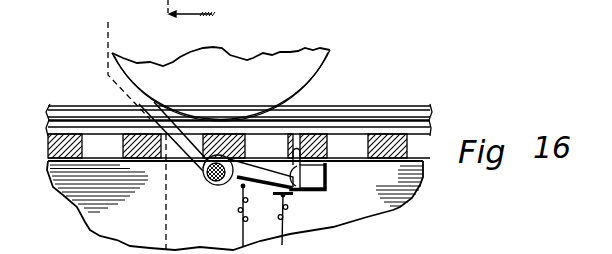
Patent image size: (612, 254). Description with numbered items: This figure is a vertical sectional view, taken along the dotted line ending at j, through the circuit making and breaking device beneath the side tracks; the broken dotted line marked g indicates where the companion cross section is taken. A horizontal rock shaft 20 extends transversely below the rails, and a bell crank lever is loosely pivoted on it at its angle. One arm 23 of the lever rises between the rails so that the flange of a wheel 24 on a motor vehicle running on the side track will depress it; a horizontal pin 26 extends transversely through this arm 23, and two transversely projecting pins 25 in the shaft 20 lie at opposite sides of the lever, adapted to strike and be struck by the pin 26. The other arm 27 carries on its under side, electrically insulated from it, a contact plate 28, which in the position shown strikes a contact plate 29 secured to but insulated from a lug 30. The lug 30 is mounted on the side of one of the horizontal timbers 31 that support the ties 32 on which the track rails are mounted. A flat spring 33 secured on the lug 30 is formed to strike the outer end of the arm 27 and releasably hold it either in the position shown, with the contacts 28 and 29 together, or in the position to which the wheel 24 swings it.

The rock shaft 20 is at (220, 185).
The arm of bell crank lever 23 is at (173, 135).
The disc 24 is at (221, 84).
The transversely projecting pins 25 is at (212, 180).
The horizontal pin 26 is at (205, 173).
The arm of bell crank lever 27 is at (255, 175).
The contact plate 28 is at (263, 188).
The contact plate 29 is at (308, 195).
The lug 30 is at (319, 173).
The horizontal timber 31 is at (235, 205).
The ties 32 is at (411, 152).
The flat spring 33 is at (335, 163).
The section line g—h g is at (125, 61).
The section line i— j is at (184, 127).